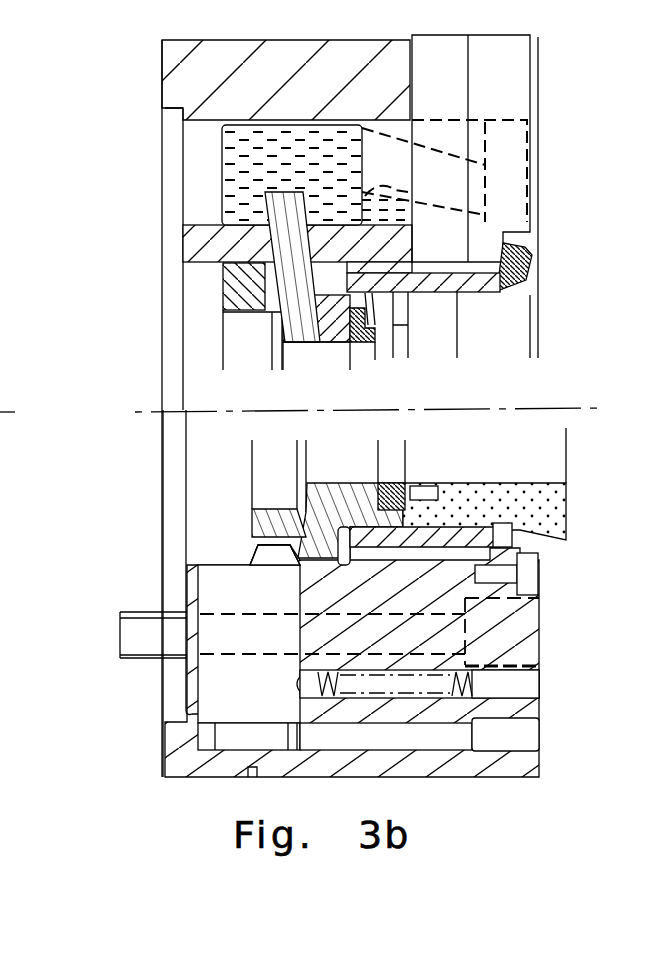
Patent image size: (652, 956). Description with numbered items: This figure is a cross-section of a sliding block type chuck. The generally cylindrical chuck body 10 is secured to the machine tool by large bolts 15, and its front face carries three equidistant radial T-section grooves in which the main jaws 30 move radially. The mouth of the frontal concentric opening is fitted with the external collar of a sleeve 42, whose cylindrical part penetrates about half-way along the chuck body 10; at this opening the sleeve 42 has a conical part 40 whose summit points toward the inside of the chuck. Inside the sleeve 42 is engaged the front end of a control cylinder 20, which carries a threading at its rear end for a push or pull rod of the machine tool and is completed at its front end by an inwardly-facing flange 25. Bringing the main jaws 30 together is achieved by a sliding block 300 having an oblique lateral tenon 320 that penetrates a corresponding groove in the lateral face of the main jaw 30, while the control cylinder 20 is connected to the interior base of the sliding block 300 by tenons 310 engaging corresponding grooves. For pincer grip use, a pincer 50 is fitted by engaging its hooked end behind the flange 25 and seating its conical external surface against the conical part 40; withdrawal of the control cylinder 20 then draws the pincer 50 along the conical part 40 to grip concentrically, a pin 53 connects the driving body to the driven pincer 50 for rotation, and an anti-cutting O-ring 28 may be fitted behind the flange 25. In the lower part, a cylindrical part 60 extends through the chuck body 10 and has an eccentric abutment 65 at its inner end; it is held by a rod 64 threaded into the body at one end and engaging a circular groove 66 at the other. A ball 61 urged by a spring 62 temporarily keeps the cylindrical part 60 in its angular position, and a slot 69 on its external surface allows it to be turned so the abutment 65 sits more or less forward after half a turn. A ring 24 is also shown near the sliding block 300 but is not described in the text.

The chuck body 10 is at (218, 74).
The main jaw 30 is at (498, 62).
The sliding block 300 is at (240, 160).
The oblique lateral tenon 320 is at (455, 165).
The tenon 310 is at (245, 218).
The sleeve 42 is at (526, 266).
The control cylinder 20 is at (245, 287).
The conical part 40 is at (497, 290).
The flange 25 is at (410, 312).
The anti-cutting O-ring 28 is at (370, 348).
The ring 24 is at (317, 542).
The eccentric abutment 65 is at (255, 558).
The cylindrical part 60 is at (222, 587).
The bolt 15 is at (135, 640).
The ball 61 is at (296, 686).
The circular groove 66 is at (205, 738).
The slot 69 is at (250, 778).
The pincer 50 is at (557, 501).
The pin 53 is at (505, 535).
The spring 62 is at (432, 682).
The rod 64 is at (518, 734).